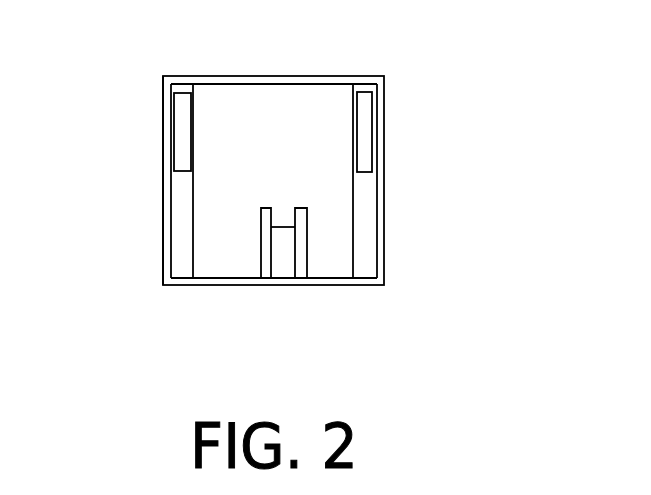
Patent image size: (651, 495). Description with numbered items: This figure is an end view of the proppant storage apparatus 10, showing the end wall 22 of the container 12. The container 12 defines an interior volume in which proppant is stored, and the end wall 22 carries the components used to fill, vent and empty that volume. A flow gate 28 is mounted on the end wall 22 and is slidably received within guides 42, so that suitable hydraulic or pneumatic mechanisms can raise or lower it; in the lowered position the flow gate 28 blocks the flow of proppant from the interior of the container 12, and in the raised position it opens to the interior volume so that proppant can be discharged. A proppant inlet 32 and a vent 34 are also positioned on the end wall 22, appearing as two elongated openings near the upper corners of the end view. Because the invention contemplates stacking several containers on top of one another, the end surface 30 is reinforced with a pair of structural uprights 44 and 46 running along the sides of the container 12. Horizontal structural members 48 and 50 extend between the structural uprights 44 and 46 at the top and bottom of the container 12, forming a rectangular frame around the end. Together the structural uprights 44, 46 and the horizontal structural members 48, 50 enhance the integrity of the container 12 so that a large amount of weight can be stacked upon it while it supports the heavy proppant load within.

The proppant storage apparatus 10 is at (417, 172).
The container 12 is at (387, 123).
The end wall 22 is at (279, 177).
The flow gate 28 is at (285, 247).
The end surface 30 is at (162, 167).
The proppant inlet 32 is at (353, 148).
The vent 34 is at (194, 124).
The guides 42 is at (259, 235).
The structural upright 44 is at (385, 204).
The structural upright 46 is at (161, 233).
The horizontal structural member 48 is at (270, 76).
The horizontal structural member 50 is at (330, 284).